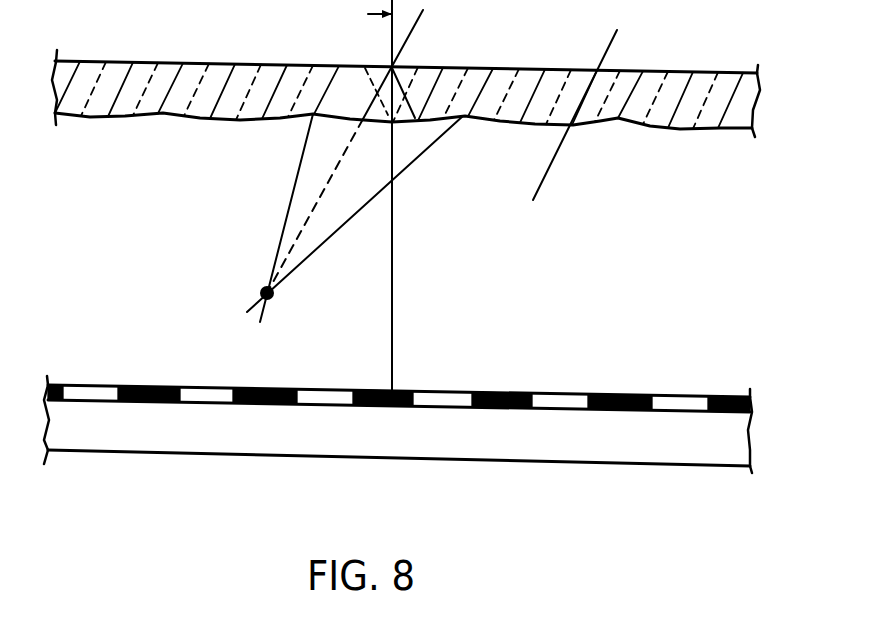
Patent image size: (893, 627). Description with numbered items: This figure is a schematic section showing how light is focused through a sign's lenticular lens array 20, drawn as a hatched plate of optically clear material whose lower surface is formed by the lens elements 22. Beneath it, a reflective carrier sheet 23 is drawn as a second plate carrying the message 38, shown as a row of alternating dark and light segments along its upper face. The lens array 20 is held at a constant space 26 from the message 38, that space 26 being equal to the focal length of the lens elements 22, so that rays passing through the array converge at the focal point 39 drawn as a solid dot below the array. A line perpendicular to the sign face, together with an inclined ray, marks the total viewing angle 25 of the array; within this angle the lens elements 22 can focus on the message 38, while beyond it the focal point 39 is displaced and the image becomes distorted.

The lens array 20 is at (198, 62).
The lens elements 22 is at (245, 122).
The reflective carrier sheet 23 is at (307, 458).
The total viewing angle 25 is at (419, 21).
The space 26 is at (580, 104).
The message 38 is at (507, 392).
The focal point 39 is at (259, 289).